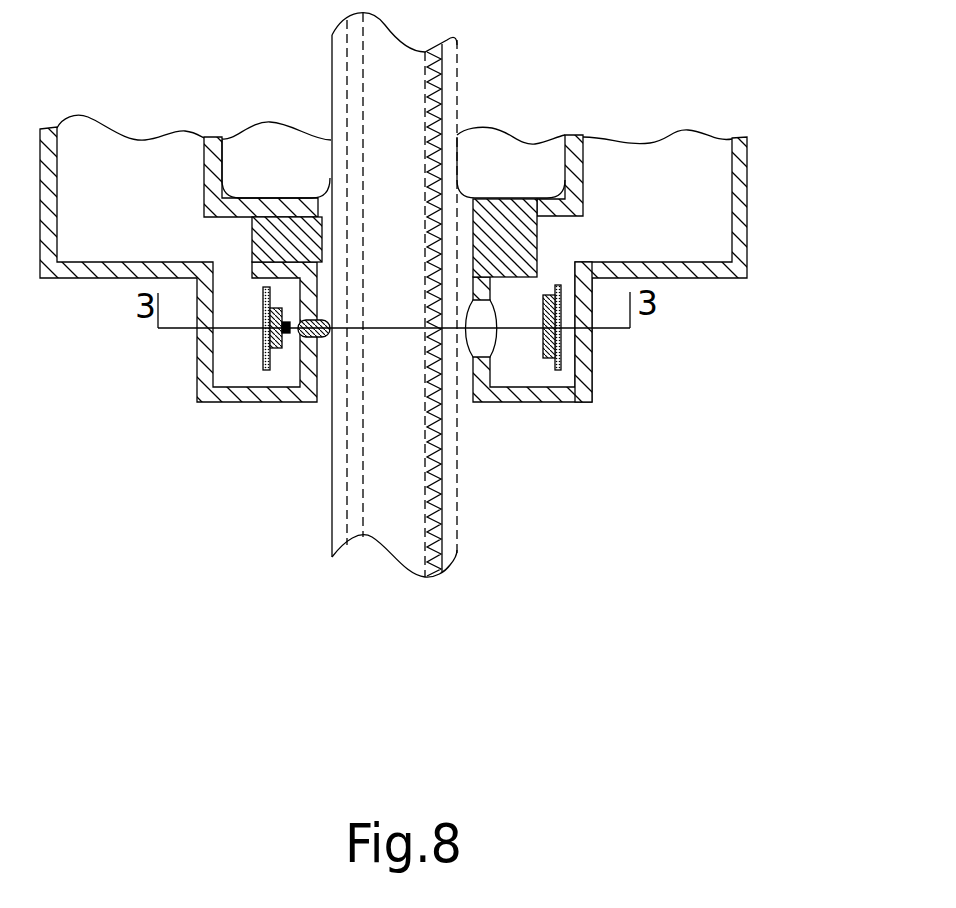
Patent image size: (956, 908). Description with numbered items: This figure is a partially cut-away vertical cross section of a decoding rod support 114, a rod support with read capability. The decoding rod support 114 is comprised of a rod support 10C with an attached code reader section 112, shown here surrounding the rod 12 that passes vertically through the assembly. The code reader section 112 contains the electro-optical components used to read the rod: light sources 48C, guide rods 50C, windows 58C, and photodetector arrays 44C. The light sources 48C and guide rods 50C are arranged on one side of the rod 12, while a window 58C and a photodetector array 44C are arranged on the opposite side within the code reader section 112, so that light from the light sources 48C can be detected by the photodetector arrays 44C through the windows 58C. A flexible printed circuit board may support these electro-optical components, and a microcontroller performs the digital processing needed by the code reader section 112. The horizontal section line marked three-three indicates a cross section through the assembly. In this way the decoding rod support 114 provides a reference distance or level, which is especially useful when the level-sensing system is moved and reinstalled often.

The rod support 10C is at (722, 278).
The decoding rod support 114 is at (520, 240).
The code reader section 112 is at (592, 349).
The tube 12 is at (462, 527).
The window 58C is at (480, 342).
The photodetector array 44C is at (544, 358).
The light source 48C is at (267, 337).
The guide rod 50C is at (303, 337).